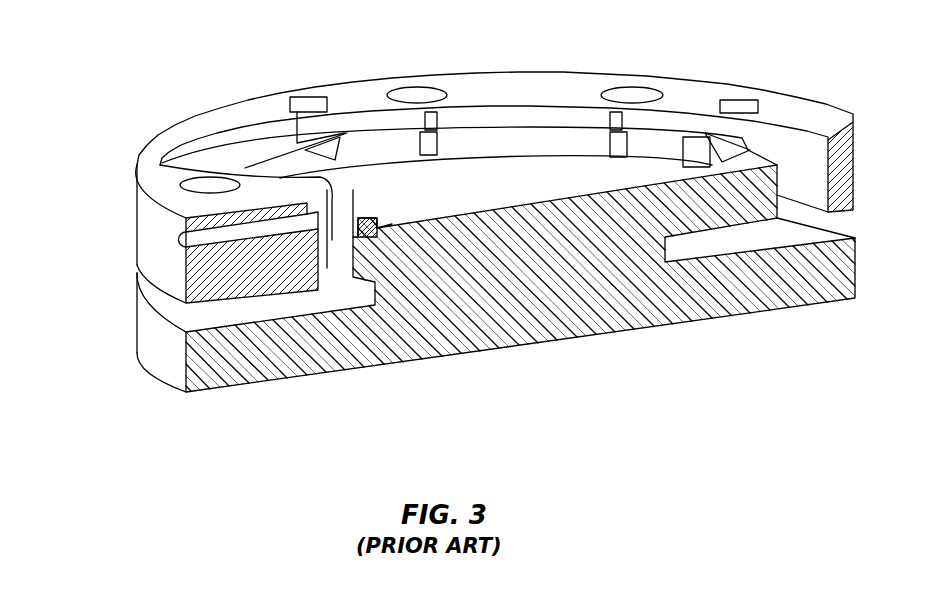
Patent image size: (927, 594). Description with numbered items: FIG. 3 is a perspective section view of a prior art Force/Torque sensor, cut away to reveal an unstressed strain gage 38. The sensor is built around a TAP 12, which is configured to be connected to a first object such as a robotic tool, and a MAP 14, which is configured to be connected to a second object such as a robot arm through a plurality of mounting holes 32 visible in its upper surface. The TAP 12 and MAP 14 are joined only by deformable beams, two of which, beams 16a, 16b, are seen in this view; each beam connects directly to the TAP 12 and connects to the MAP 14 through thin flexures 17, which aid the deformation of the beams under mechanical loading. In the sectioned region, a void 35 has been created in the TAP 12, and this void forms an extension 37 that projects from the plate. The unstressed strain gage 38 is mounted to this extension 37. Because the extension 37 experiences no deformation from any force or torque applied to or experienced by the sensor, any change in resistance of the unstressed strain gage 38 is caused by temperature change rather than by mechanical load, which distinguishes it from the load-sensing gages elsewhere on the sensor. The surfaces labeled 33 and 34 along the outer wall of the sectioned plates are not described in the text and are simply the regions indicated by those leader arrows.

The TAP 12 is at (533, 182).
The MAP 14 is at (536, 100).
The deformable beam 16a is at (303, 157).
The deformable beam 16b is at (723, 162).
The thin flexure 17 is at (310, 168).
The mounting hole 32 is at (633, 96).
The groove 33 is at (178, 240).
The gap 34 is at (148, 297).
The void 35 is at (381, 227).
The extension 37 is at (350, 215).
The unstressed strain gage 38 is at (367, 216).